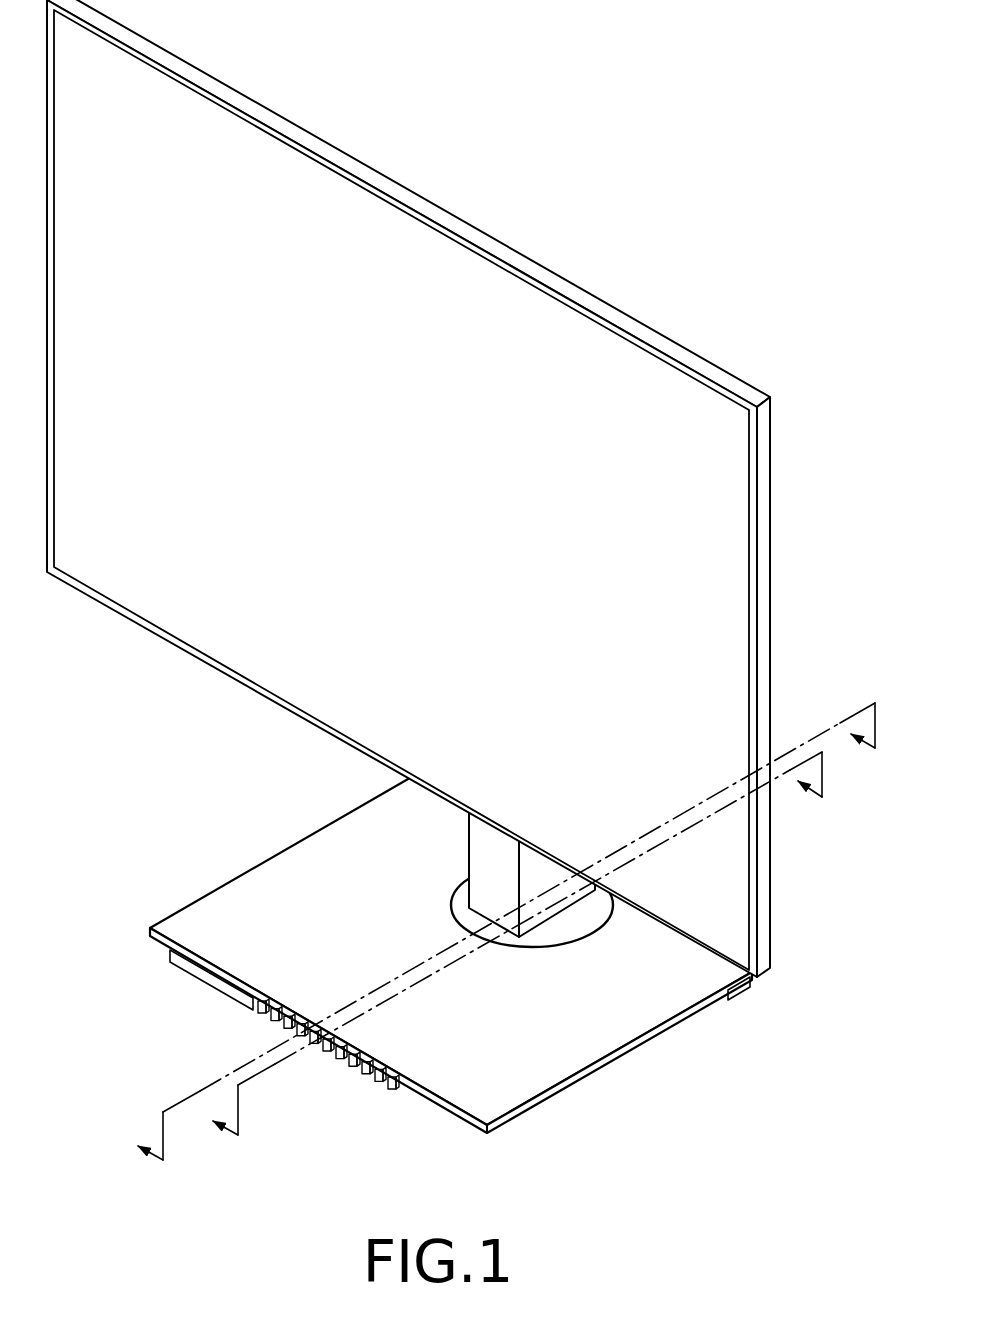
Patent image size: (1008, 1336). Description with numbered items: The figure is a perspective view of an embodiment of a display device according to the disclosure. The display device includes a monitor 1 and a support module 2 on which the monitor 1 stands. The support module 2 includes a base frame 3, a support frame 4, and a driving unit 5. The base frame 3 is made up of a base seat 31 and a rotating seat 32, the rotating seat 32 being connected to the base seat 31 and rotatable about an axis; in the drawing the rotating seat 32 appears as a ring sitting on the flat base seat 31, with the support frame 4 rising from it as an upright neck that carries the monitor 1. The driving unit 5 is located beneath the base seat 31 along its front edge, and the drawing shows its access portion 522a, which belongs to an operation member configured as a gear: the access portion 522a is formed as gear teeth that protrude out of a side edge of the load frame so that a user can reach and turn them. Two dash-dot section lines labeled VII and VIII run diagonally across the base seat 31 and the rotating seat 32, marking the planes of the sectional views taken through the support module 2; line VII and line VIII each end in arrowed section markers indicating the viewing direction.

The monitor 1 is at (443, 207).
The support module 2 is at (451, 981).
The base frame 3 is at (451, 989).
The base seat 31 is at (572, 1028).
The rotating seat 32 is at (573, 930).
The support frame 4 is at (590, 904).
The driving unit 5 is at (284, 1074).
The access portion 522a is at (332, 1057).
The section line VII is at (505, 950).
The section line VIII is at (517, 962).